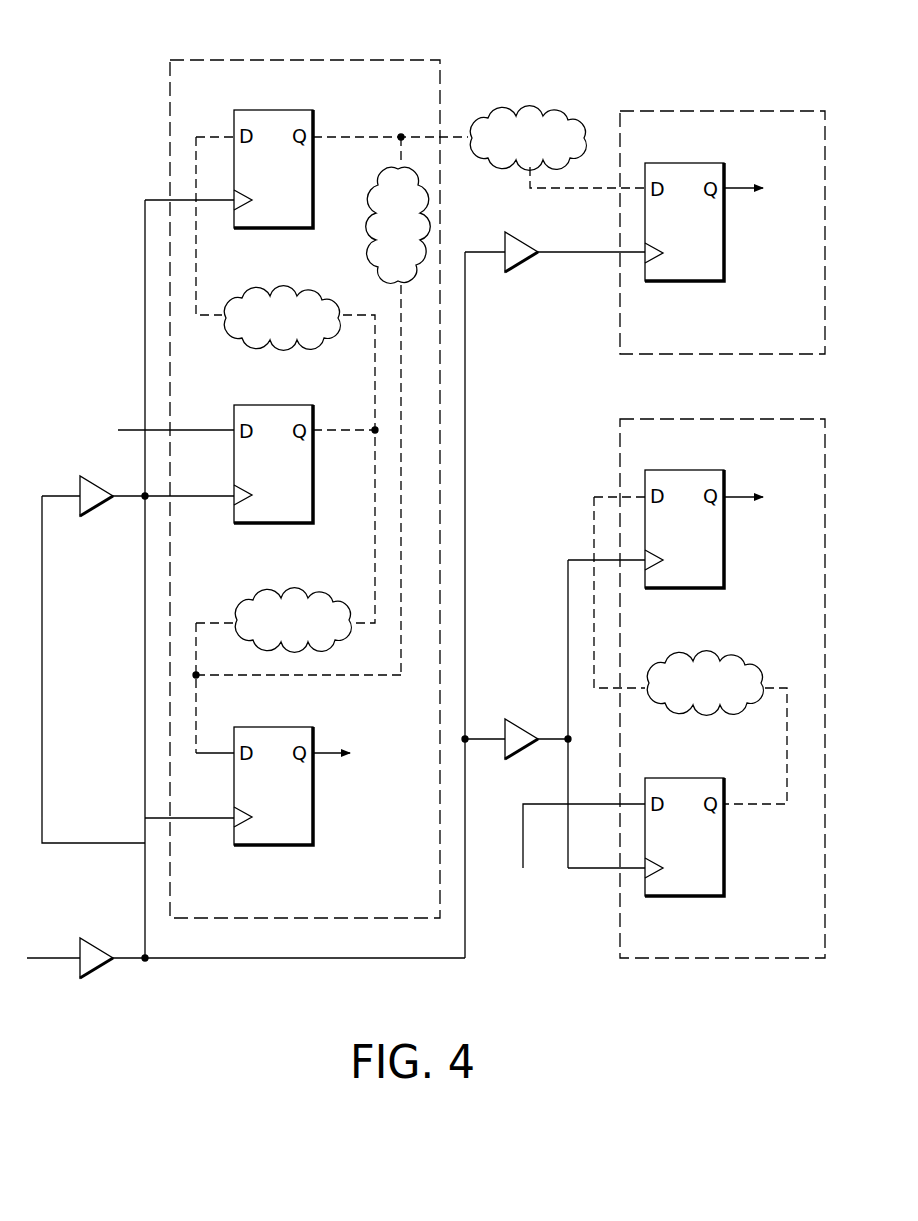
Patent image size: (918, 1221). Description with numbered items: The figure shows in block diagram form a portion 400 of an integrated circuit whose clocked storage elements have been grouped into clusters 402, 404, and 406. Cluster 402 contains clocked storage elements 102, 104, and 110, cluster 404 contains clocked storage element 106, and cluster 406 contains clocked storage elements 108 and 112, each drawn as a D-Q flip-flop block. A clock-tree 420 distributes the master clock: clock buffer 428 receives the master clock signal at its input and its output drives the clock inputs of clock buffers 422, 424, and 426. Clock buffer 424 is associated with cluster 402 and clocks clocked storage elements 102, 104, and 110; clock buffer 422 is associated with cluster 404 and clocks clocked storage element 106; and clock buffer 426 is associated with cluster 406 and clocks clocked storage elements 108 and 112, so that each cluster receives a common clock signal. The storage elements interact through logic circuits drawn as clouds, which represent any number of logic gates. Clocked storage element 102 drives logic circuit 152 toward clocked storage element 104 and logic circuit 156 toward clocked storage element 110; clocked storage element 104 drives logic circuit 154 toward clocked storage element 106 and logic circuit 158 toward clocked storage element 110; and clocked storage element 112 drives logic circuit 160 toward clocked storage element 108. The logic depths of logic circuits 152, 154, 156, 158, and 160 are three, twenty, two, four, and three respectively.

The portion of an integrated circuit 400 is at (130, 30).
The cluster 402 is at (378, 60).
The cluster 404 is at (760, 111).
The cluster 406 is at (760, 419).
The clocked storage element 102 is at (282, 405).
The clocked storage element 104 is at (288, 94).
The clocked storage element 106 is at (692, 163).
The clocked storage element 108 is at (692, 470).
The clocked storage element 110 is at (276, 727).
The clocked storage element 112 is at (697, 778).
The logic circuit 152 is at (246, 343).
The logic circuit 154 is at (548, 108).
The logic circuit 156 is at (260, 593).
The logic circuit 158 is at (368, 254).
The logic circuit 160 is at (692, 712).
The clock-tree 420 is at (26, 934).
The clock buffer 422 is at (514, 241).
The clock buffer 424 is at (97, 510).
The clock buffer 426 is at (514, 729).
The clock buffer 428 is at (94, 944).